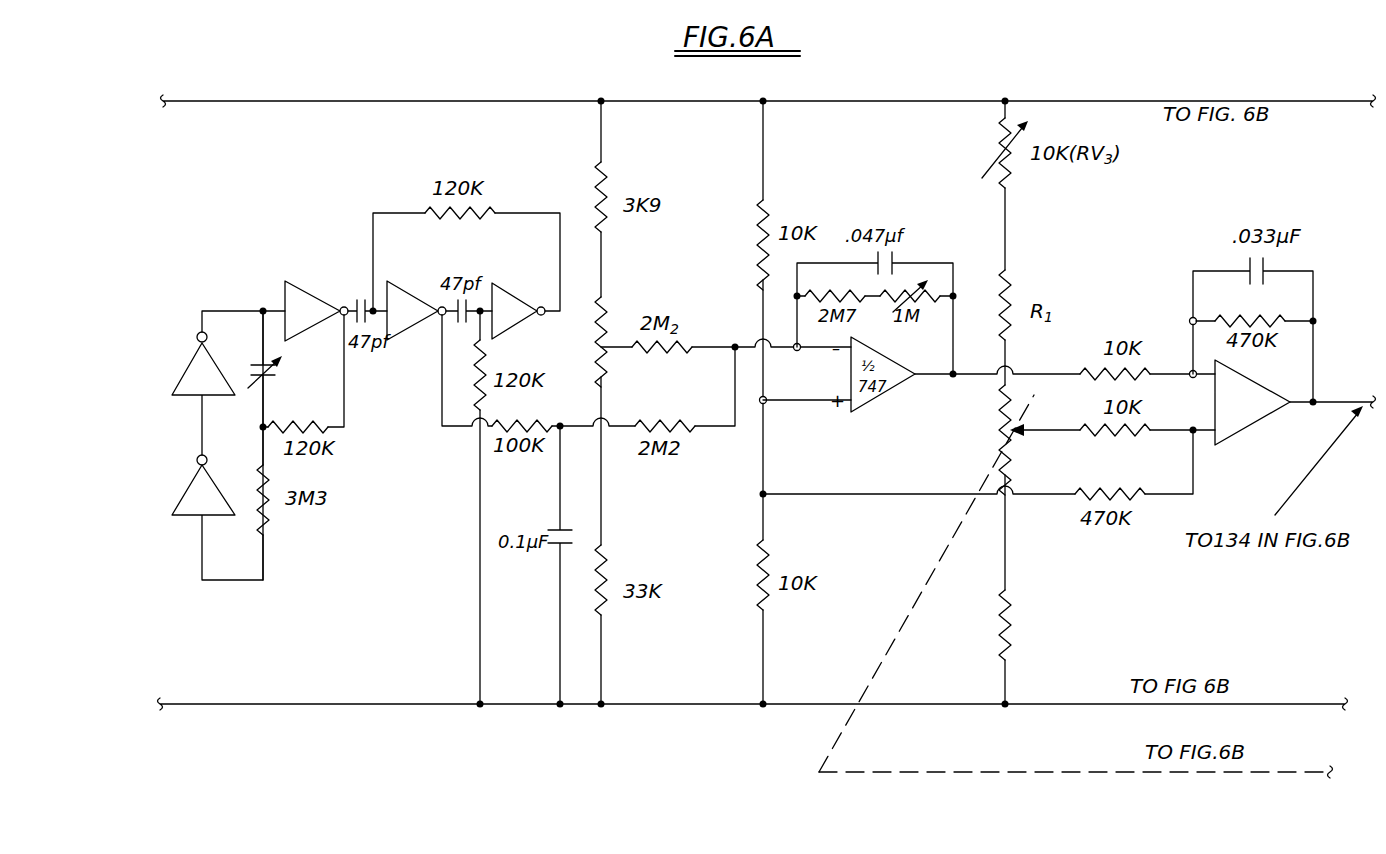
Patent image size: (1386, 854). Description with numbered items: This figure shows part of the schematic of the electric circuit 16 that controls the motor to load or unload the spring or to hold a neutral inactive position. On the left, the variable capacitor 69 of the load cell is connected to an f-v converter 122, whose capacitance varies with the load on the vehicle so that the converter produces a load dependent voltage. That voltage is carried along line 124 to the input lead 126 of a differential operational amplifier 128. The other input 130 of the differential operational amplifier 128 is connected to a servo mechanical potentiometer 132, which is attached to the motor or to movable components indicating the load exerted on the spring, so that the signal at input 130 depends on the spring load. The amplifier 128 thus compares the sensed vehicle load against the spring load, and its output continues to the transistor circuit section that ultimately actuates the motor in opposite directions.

The electric circuit 16 is at (540, 97).
The variable capacitor 69 is at (268, 381).
The f-v converter 122 is at (533, 326).
The line 124 is at (624, 425).
The input lead 126 is at (1178, 372).
The differential operational amplifier 128 is at (1250, 414).
The second input 130 is at (1200, 437).
The servo-potentiometer 132 is at (1050, 438).